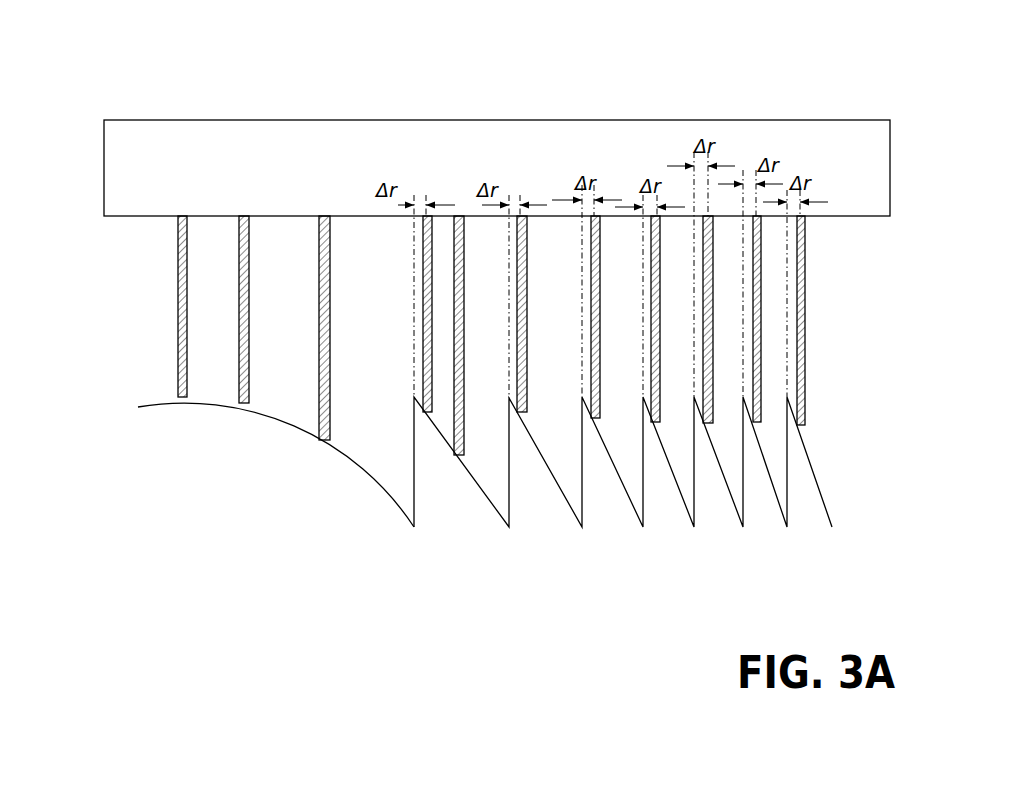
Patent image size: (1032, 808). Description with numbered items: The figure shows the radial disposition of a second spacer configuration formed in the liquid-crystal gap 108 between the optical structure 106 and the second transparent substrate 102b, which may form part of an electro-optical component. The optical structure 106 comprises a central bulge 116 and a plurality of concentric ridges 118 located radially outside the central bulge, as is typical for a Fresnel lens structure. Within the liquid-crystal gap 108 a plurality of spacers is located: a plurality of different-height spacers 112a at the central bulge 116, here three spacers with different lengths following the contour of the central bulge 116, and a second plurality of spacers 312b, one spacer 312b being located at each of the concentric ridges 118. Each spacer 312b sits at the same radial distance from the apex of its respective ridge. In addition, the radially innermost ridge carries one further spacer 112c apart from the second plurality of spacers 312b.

The second transparent substrate 102b is at (73, 168).
The different-height spacers 112a is at (319, 382).
The further spacer 112c is at (463, 452).
The second plurality of spacers 312b is at (428, 237).
The optical structure 106 is at (150, 485).
The central bulge 116 is at (222, 443).
The concentric ridges 118 is at (634, 578).
The liquid-crystal gap 108 is at (842, 294).